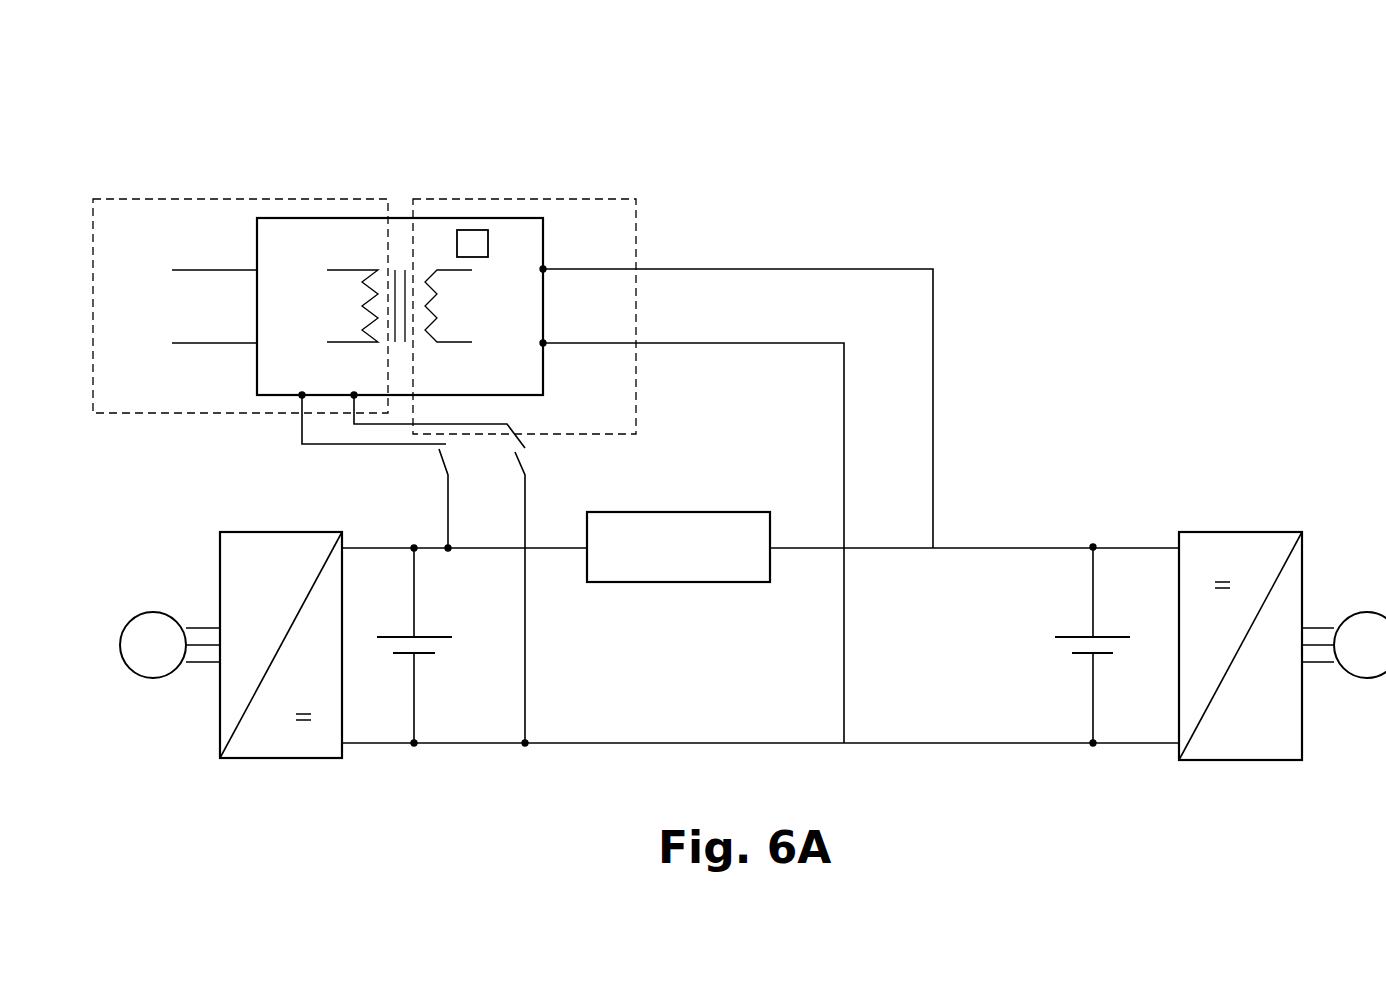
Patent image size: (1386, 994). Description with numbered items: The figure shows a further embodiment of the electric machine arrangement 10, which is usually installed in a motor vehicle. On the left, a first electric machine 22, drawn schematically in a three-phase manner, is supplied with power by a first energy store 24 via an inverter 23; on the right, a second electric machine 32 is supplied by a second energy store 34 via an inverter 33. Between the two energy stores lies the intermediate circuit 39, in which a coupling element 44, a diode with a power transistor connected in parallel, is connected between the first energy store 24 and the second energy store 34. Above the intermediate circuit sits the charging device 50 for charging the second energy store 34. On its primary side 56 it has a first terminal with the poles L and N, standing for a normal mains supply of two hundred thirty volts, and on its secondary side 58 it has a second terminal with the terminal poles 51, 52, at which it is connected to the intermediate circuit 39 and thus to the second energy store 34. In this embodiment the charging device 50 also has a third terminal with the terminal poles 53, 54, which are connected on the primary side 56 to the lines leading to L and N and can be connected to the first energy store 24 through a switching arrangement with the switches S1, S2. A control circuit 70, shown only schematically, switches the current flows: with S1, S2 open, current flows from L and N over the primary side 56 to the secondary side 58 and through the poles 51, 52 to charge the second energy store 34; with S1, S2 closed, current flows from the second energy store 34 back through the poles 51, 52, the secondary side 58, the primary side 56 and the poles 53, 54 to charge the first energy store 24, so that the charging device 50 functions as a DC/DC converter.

The electric machine arrangement 10 is at (925, 188).
The primary side 56 is at (222, 199).
The secondary side 58 is at (549, 199).
The charging device 50 is at (401, 218).
The control circuit 70 is at (472, 230).
The terminal pole 51 is at (548, 268).
The terminal pole 52 is at (548, 342).
The terminal pole 53 is at (300, 398).
The terminal pole 54 is at (354, 393).
The switch S1 is at (429, 500).
The switch S2 is at (505, 599).
The intermediate circuit 39 is at (1010, 547).
The coupling element 44 is at (770, 442).
The inverter 23 is at (297, 532).
The first electric machine 22 is at (120, 645).
The first energy store 24 is at (405, 656).
The second energy store 34 is at (1103, 656).
The inverter 33 is at (1262, 532).
The second electric machine 32 is at (1365, 678).